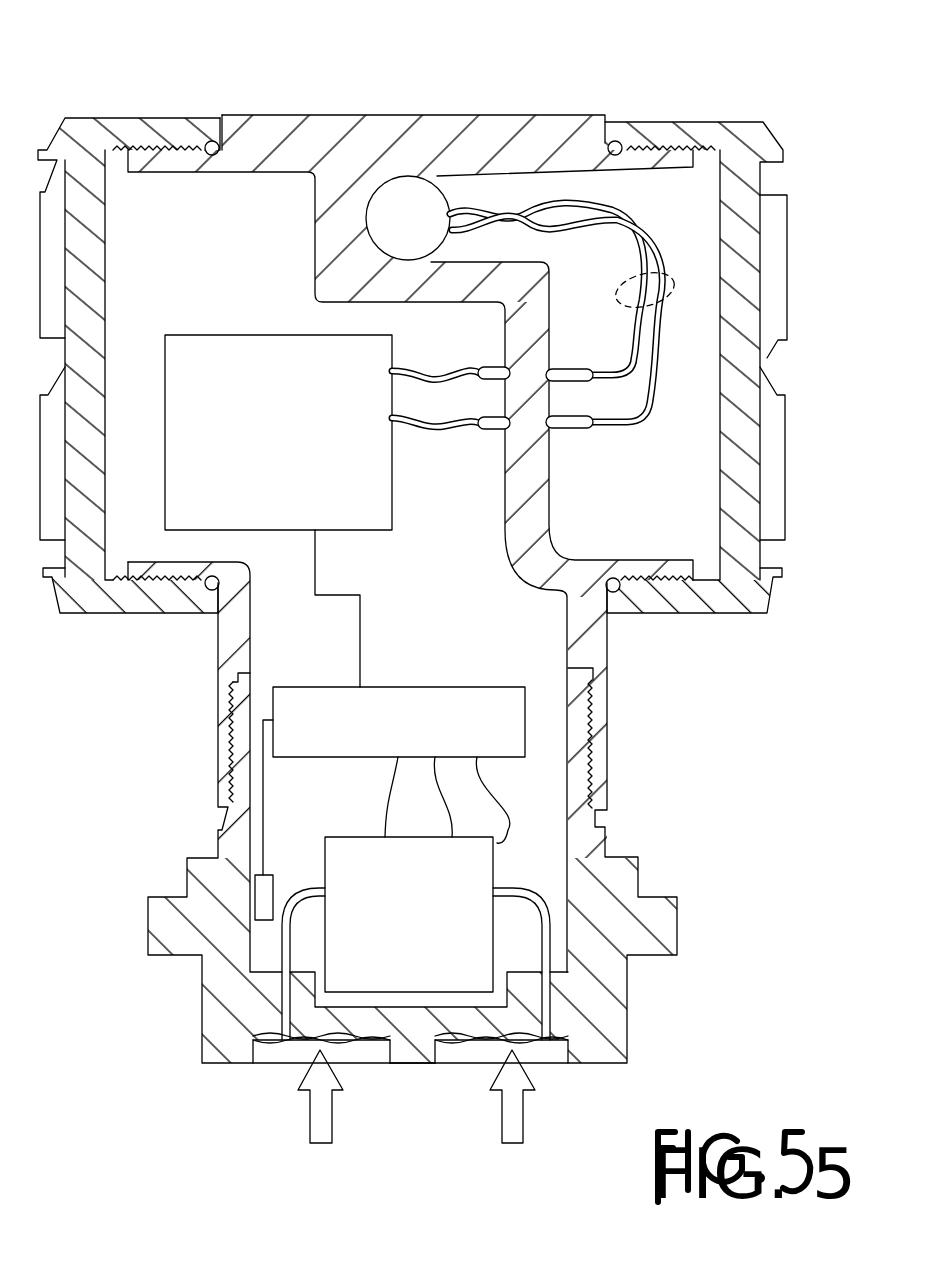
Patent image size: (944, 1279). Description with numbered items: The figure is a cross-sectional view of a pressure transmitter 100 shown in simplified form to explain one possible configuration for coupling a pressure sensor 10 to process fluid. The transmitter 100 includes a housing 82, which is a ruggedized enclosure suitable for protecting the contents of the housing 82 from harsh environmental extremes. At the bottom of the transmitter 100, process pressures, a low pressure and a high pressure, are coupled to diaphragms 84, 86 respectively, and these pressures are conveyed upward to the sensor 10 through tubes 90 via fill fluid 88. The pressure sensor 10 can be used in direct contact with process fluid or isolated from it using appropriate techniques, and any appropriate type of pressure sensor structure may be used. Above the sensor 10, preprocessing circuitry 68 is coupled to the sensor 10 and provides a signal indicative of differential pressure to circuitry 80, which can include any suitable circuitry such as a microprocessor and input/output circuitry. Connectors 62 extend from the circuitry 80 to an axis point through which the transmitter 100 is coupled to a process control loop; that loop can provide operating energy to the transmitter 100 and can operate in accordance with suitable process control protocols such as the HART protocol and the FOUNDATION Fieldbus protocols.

The transmitter 100 is at (420, 98).
The housing 82 is at (562, 117).
The connectors 62 is at (672, 296).
The circuitry 80 is at (278, 454).
The preprocessing circuitry 68 is at (406, 732).
The pressure sensor 10 is at (418, 919).
The tubes 90 is at (297, 886).
The diaphragm 84 is at (290, 1062).
The diaphragm 86 is at (545, 1063).
The fill fluid 88 is at (367, 1063).